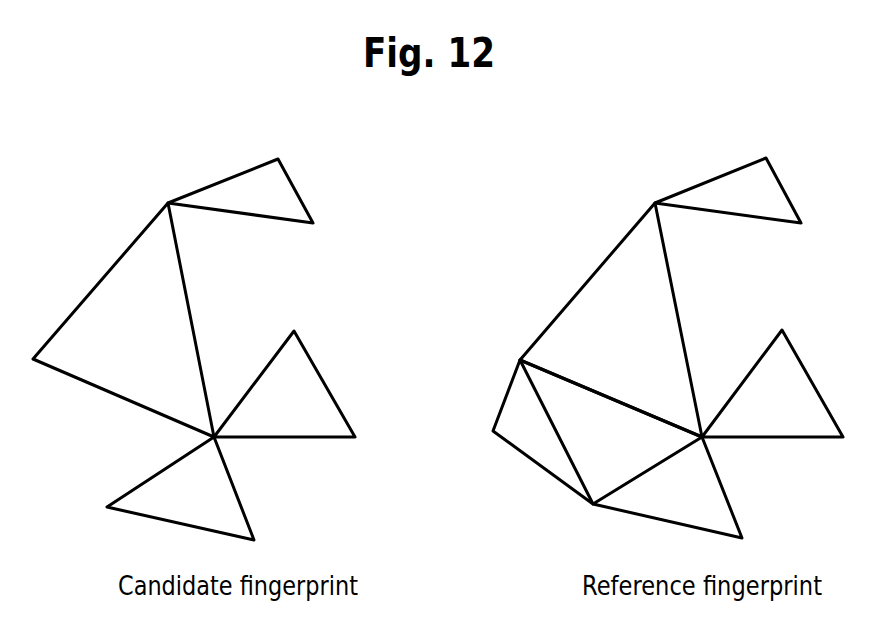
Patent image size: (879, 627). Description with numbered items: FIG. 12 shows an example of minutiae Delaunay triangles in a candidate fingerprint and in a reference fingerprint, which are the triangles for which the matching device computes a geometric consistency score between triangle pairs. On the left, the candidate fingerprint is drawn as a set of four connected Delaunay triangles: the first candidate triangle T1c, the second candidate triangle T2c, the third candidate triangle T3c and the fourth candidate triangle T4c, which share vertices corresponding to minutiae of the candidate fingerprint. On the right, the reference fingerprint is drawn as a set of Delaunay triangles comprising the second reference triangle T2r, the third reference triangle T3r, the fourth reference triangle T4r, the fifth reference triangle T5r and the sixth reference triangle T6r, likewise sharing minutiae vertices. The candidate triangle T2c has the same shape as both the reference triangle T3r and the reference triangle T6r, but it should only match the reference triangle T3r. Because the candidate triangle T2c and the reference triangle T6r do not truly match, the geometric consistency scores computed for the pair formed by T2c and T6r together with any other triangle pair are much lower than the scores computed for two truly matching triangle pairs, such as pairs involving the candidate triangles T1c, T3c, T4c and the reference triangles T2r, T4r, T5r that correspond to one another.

The triangle 1 of the candidate fingerprint T1c is at (123, 320).
The triangle 2 of the candidate fingerprint T2c is at (240, 180).
The triangle 3 of the candidate fingerprint T3c is at (284, 382).
The triangle 4 of the candidate fingerprint T4c is at (192, 488).
The triangle 2 of the reference fingerprint T2r is at (611, 320).
The triangle 3 of the reference fingerprint T3r is at (728, 180).
The triangle 4 of the reference fingerprint T4r is at (772, 383).
The triangle 5 of the reference fingerprint T5r is at (679, 487).
The triangle 6 of the reference fingerprint T6r is at (543, 432).